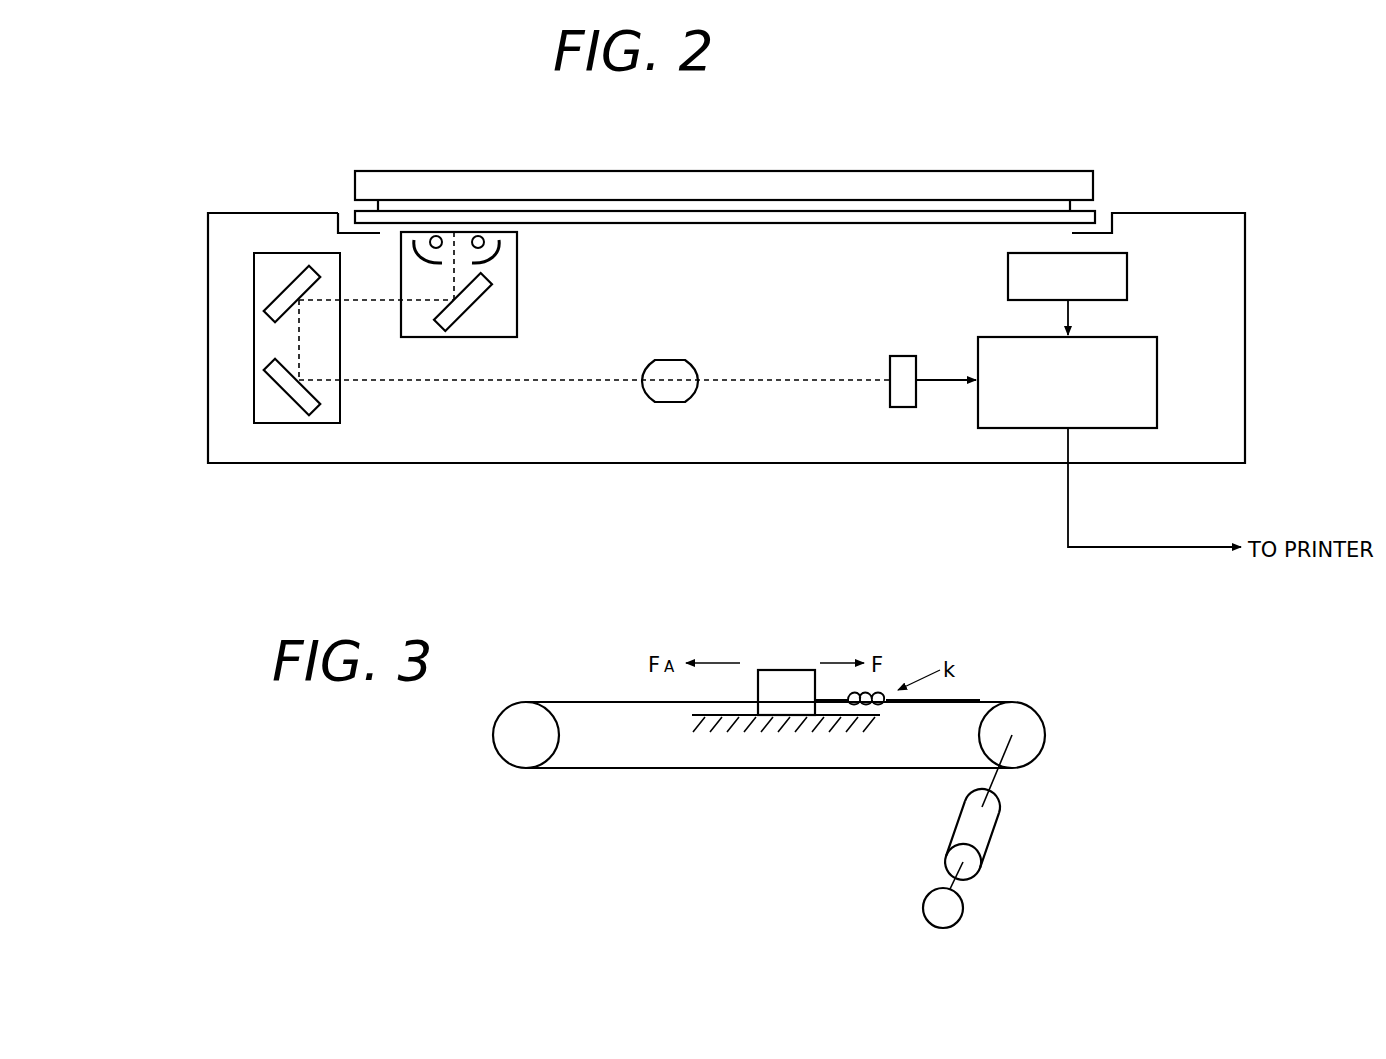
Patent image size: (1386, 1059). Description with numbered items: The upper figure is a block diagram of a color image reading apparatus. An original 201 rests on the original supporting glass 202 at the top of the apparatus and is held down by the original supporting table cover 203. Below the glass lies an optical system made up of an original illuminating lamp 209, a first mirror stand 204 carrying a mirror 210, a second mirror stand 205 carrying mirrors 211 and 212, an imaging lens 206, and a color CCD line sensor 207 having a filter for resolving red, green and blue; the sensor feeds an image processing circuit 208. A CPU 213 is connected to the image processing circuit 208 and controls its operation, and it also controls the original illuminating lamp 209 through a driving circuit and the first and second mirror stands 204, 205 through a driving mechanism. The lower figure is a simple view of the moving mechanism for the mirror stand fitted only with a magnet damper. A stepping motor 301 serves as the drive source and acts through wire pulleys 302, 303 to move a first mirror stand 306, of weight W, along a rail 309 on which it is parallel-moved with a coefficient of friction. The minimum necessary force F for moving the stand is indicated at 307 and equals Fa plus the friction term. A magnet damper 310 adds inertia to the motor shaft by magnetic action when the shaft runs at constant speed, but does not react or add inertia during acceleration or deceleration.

In FIG. 2, the original 201 is at (427, 207).
In FIG. 2, the original supporting glass 202 is at (1095, 215).
In FIG. 2, the original supporting table cover 203 is at (1000, 171).
In FIG. 2, the first mirror stand 204 is at (527, 271).
In FIG. 2, the second mirror stand 205 is at (241, 347).
In FIG. 2, the imaging lens 206 is at (683, 358).
In FIG. 2, the color CCD line sensor 207 is at (912, 356).
In FIG. 2, the image processing circuit 208 is at (1120, 337).
In FIG. 2, the original illuminating lamp 209 is at (500, 250).
In FIG. 2, the mirror 210 is at (470, 310).
In FIG. 2, the mirror 211 is at (288, 280).
In FIG. 2, the mirror 212 is at (287, 393).
In FIG. 2, the CPU 213 is at (1127, 263).
In FIG. 3, the stepping motor 301 is at (1000, 835).
In FIG. 3, the wire pulley 302 is at (500, 748).
In FIG. 3, the wire pulley 303 is at (1043, 723).
In FIG. 3, the first mirror stand 306 is at (802, 670).
In FIG. 3, the minimum necessary force F 307 is at (890, 652).
In FIG. 3, the rail 309 is at (863, 727).
In FIG. 3, the magnet damper 310 is at (967, 913).